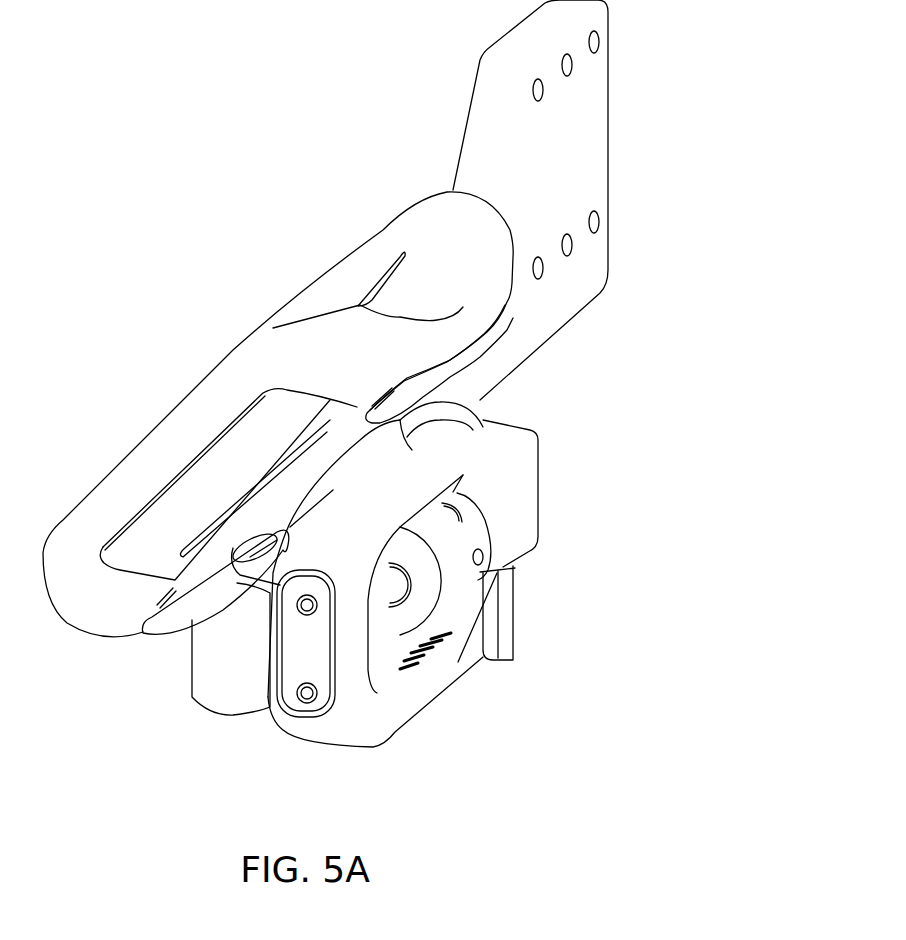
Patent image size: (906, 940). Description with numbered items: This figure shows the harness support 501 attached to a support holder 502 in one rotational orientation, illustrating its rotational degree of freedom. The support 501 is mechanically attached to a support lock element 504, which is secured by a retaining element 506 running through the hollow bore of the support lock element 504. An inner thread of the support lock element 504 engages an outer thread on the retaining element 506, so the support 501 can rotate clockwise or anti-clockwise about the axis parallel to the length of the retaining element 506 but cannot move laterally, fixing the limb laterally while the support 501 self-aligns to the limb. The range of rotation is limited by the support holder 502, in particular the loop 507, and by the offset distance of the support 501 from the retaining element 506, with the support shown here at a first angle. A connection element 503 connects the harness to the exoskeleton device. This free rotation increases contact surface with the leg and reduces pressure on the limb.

The support 501 is at (405, 218).
The support holder 502 is at (550, 488).
The connection element 503 is at (590, 158).
The support lock element 504 is at (477, 563).
The retaining element 506 is at (380, 603).
The loop 507 is at (460, 660).